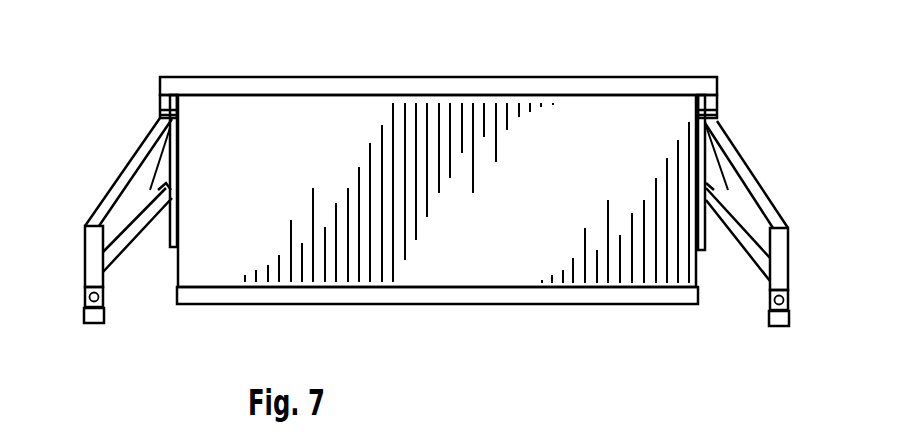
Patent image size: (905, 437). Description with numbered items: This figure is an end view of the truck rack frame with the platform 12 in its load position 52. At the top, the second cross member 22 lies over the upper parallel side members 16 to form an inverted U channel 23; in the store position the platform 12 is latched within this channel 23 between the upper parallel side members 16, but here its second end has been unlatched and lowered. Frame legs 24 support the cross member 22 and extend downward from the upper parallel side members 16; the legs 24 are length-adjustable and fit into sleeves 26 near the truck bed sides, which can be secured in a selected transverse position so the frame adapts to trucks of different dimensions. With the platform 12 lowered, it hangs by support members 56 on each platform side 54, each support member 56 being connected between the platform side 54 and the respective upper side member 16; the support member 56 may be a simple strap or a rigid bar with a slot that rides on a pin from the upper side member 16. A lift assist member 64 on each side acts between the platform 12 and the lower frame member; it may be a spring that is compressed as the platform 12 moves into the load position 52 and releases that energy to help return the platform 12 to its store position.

The platform 12 is at (623, 275).
The upper parallel side member 16 is at (163, 102).
The second cross member 22 is at (485, 78).
The inverted U channel 23 is at (630, 125).
The frame leg 24 is at (130, 172).
The sleeve 26 is at (85, 290).
The load position 52 is at (458, 268).
The platform side 54 is at (171, 247).
The support member 56 is at (170, 150).
The lift assist member 64 is at (112, 270).